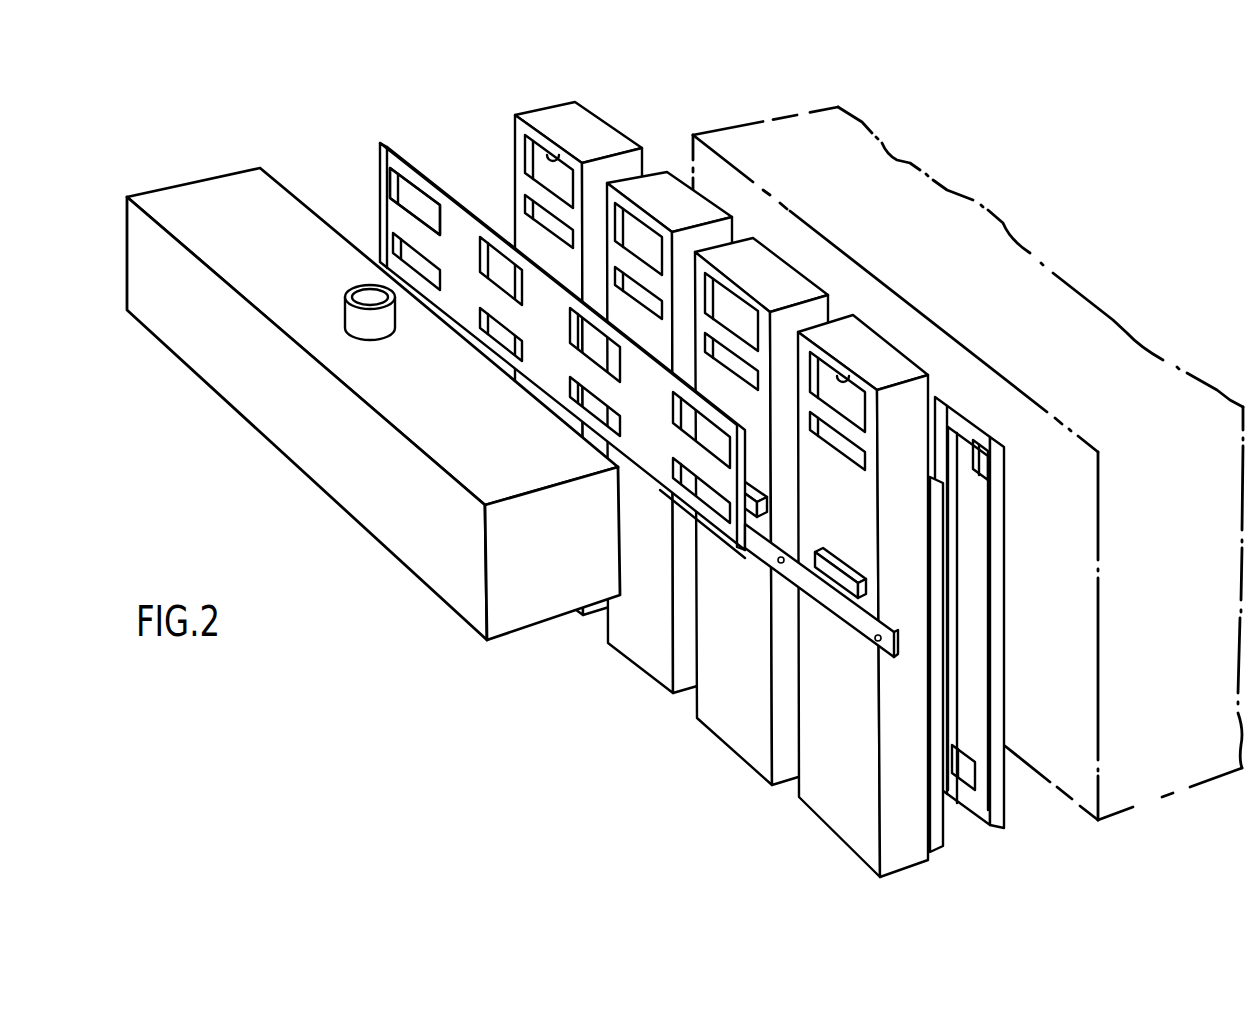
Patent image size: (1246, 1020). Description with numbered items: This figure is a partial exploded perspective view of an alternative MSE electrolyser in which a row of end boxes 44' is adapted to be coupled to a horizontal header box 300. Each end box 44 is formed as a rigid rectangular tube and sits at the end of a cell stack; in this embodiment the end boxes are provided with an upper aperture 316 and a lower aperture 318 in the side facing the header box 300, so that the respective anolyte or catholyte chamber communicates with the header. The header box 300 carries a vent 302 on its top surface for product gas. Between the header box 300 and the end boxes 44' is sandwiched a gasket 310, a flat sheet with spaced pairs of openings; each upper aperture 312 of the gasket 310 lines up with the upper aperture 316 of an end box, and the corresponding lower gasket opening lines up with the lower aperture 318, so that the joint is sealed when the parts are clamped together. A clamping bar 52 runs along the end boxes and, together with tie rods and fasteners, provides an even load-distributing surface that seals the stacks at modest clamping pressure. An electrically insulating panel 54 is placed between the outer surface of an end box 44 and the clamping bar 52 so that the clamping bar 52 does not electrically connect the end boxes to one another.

The header box 300 is at (300, 443).
The vent 302 is at (344, 303).
The gasket 310 is at (378, 212).
The upper aperture of gasket 312 is at (428, 186).
The upper aperture 316 is at (560, 152).
The lower aperture 318 is at (533, 210).
The end box 44' is at (721, 460).
The end box 44 is at (957, 650).
The clamping bar 52 is at (831, 606).
The electrically insulating panel 54 is at (820, 554).